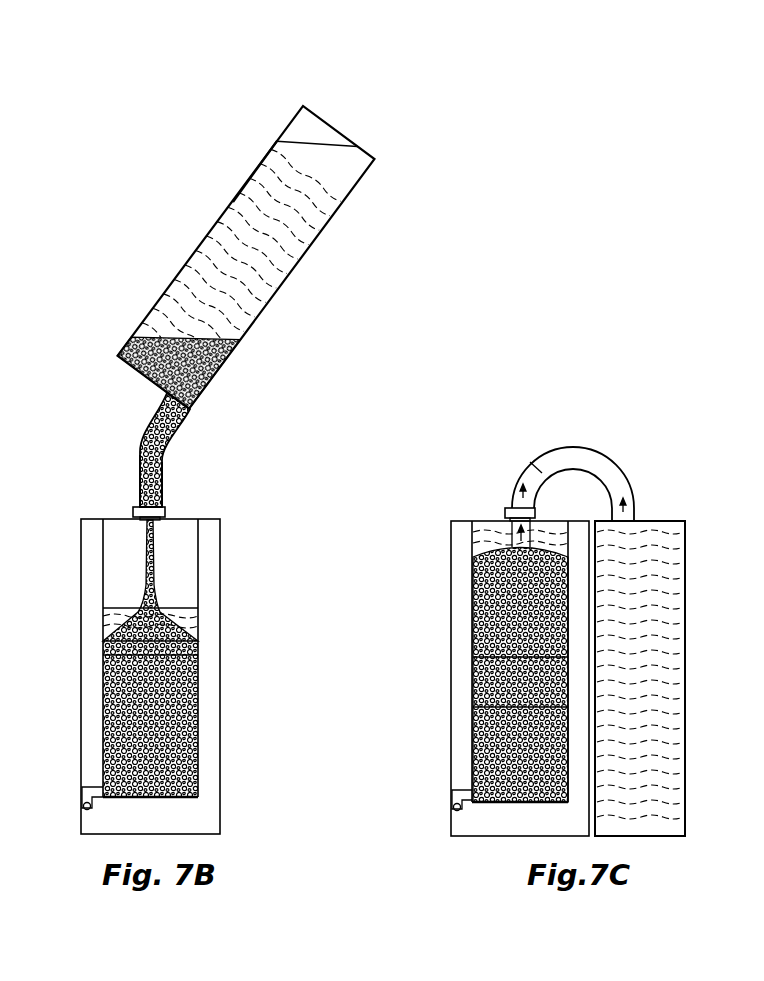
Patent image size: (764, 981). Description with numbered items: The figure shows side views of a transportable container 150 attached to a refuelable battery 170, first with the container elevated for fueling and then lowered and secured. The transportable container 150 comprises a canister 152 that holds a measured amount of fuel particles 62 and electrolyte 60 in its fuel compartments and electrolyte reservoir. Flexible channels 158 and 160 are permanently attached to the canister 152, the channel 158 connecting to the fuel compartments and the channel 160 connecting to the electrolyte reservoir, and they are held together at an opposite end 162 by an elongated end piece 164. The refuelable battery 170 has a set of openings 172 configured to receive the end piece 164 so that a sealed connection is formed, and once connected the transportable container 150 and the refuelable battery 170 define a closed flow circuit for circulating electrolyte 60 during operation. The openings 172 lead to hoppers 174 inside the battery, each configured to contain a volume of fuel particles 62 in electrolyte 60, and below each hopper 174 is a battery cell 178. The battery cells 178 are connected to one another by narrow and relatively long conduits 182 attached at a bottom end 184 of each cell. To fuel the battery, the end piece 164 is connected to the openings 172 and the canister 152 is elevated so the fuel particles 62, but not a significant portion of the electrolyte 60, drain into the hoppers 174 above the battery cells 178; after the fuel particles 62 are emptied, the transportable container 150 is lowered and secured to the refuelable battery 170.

In FIG. 7B, the transportable container 150 is at (357, 128).
In FIG. 7C, the transportable container 150 is at (692, 653).
In FIG. 7B, the canister 152 is at (252, 178).
In FIG. 7C, the canister 152 is at (673, 718).
In FIG. 7B, the electrolyte 60 is at (207, 261).
In FIG. 7B, the fuel particles 62 is at (132, 343).
In FIG. 7B, the flexible channel 158 is at (140, 443).
In FIG. 7B, the opposite end 162 is at (140, 485).
In FIG. 7B, the elongated end piece 164 is at (165, 512).
In FIG. 7C, the elongated end piece 164 is at (506, 510).
In FIG. 7B, the set of openings 172 is at (167, 517).
In FIG. 7B, the refuelable battery 170 is at (226, 666).
In FIG. 7C, the refuelable battery 170 is at (445, 643).
In FIG. 7B, the hopper 174 is at (198, 568).
In FIG. 7C, the hopper 174 is at (472, 582).
In FIG. 7B, the battery cell 178 is at (200, 722).
In FIG. 7C, the battery cell 178 is at (472, 706).
In FIG. 7B, the conduit 182 is at (82, 788).
In FIG. 7C, the conduit 182 is at (455, 800).
In FIG. 7B, the bottom end 184 is at (200, 782).
In FIG. 7C, the flexible channel 160 is at (543, 448).